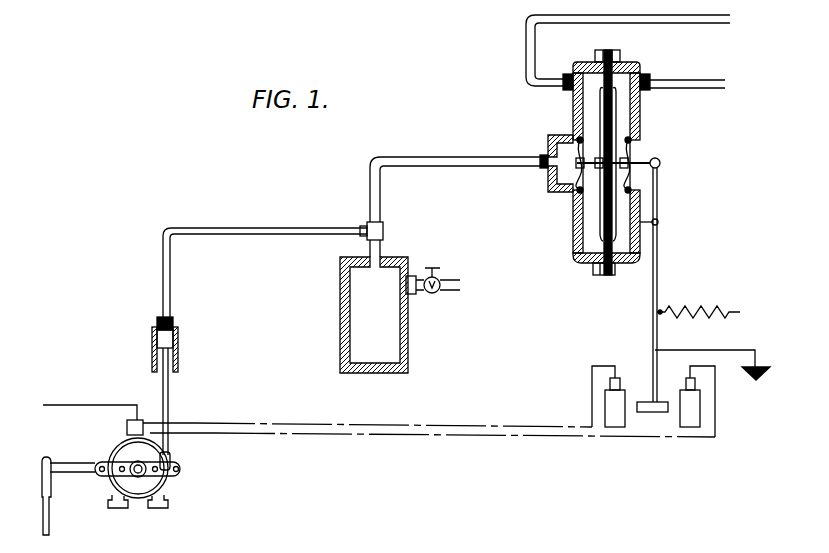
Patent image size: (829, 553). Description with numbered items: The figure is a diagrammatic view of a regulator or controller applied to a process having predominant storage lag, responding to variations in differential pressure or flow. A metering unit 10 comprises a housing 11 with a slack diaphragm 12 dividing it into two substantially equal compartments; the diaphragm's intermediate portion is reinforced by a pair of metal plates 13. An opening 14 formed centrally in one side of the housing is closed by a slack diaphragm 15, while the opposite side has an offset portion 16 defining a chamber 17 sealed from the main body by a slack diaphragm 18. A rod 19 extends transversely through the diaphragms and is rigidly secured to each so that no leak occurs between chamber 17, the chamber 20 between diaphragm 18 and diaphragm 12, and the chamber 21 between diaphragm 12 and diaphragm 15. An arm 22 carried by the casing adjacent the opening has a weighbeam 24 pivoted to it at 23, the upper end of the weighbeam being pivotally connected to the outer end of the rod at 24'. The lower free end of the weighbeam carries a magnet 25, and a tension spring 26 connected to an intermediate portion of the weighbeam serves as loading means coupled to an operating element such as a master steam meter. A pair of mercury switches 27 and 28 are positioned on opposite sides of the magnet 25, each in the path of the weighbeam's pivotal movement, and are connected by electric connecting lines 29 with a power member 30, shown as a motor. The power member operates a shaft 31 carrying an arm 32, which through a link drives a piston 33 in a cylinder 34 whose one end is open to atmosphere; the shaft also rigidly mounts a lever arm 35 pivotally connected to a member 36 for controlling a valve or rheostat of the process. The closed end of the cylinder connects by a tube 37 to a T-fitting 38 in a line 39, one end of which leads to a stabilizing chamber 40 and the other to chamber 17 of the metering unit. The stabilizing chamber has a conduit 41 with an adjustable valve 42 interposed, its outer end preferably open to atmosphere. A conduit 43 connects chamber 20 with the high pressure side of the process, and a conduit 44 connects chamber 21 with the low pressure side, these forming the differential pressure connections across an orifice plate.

The metering unit 10 is at (607, 178).
The housing 11 is at (577, 106).
The slack diaphragm 12 is at (603, 249).
The metal plates 13 is at (617, 112).
The opening 14 is at (633, 147).
The slack diaphragm 15 is at (640, 157).
The offset portion 16 is at (553, 179).
The chamber 17 is at (553, 142).
The slack diaphragm 18 is at (580, 187).
The rod 19 is at (648, 172).
The chamber 20 is at (588, 244).
The chamber 21 is at (622, 246).
The arm 22 is at (646, 232).
The pivot 23 is at (660, 222).
The weighbeam 24 is at (674, 285).
The pivotal connection 24' is at (683, 171).
The magnet 25 is at (650, 412).
The tension spring 26 is at (710, 318).
The mercury switch 27 is at (612, 407).
The mercury switch 28 is at (701, 410).
The electric connecting lines 29 is at (445, 426).
The power member 30 is at (152, 485).
The shaft 31 is at (135, 461).
The arm 32 is at (181, 470).
The piston 33 is at (174, 343).
The cylinder 34 is at (179, 365).
The lever arm 35 is at (72, 473).
The member 36 is at (50, 527).
The tube 37 is at (171, 275).
The T-fitting 38 is at (384, 231).
The line 39 is at (435, 160).
The stabilizing chamber 40 is at (355, 322).
The conduit 41 is at (452, 288).
The adjustable valve 42 is at (447, 268).
The conduit 43 is at (527, 50).
The conduit 44 is at (700, 86).